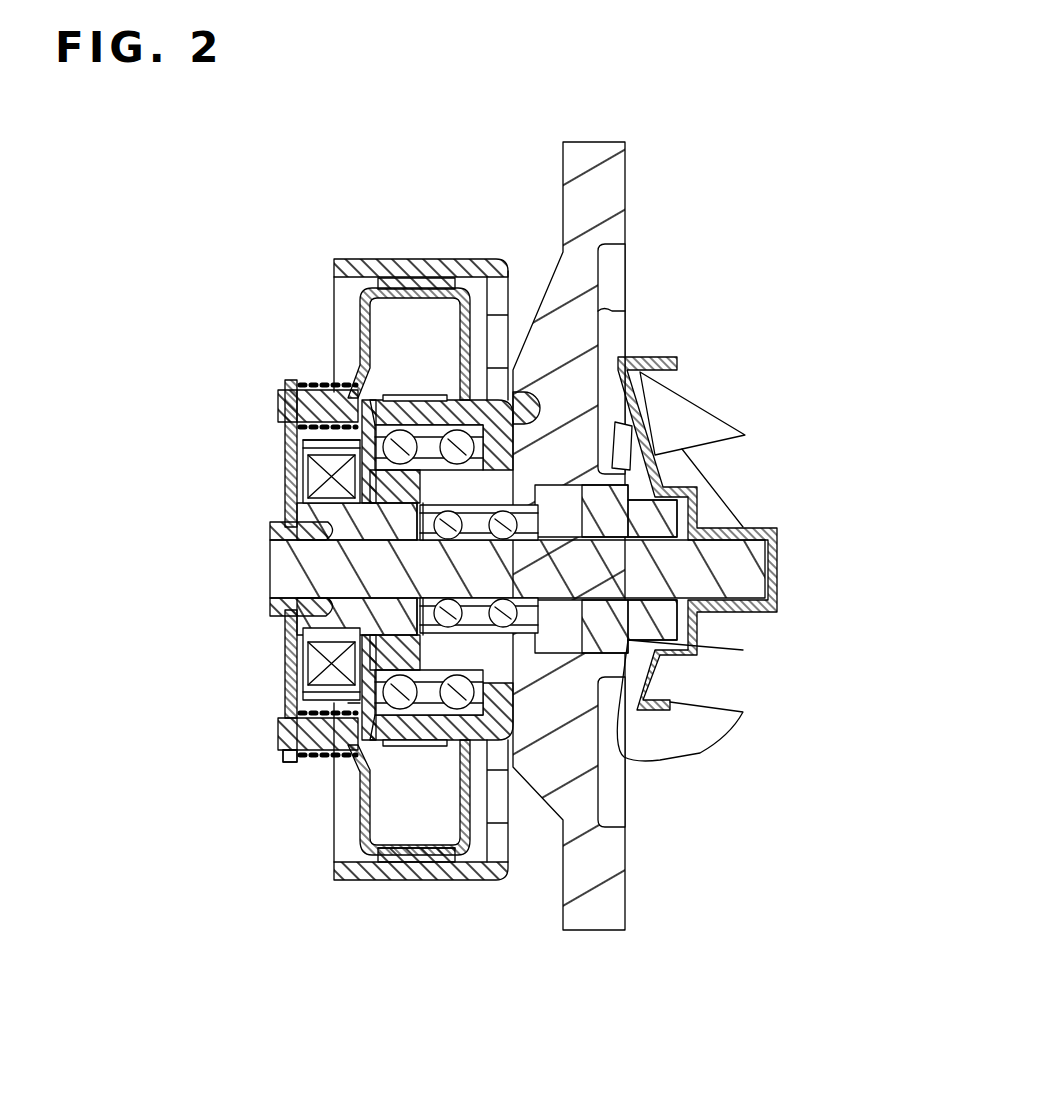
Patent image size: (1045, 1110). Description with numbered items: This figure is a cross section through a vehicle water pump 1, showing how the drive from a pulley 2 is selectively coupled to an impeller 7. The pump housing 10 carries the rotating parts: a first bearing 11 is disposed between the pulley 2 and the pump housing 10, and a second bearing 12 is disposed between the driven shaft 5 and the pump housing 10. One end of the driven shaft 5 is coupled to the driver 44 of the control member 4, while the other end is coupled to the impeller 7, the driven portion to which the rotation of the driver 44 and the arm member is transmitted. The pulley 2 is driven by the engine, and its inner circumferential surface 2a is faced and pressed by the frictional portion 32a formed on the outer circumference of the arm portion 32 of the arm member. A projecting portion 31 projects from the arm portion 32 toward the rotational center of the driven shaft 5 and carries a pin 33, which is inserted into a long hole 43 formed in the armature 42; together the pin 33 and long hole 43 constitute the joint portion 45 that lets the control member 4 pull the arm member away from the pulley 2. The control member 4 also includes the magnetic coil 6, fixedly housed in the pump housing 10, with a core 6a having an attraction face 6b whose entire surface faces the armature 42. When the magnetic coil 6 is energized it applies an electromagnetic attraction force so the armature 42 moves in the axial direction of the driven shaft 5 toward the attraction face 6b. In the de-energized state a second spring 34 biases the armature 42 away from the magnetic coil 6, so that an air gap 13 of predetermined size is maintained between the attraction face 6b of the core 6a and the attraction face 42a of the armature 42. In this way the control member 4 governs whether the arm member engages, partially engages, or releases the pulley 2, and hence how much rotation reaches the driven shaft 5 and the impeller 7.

The water pump 1 is at (623, 94).
The pulley 2 is at (387, 266).
The inner circumferential surface 2a is at (336, 283).
The control member 4 is at (230, 417).
The driven shaft 5 is at (731, 567).
The magnetic coil 6 is at (290, 480).
The core 6a is at (273, 531).
The attraction face 6b is at (297, 497).
The impeller 7 is at (705, 418).
The pump housing 10 is at (597, 214).
The first bearing 11 is at (431, 443).
The second bearing 12 is at (522, 626).
The air gap 13 is at (300, 380).
The projecting portion 31 is at (337, 797).
The arm portion 32 is at (378, 842).
The frictional portion 32a is at (417, 856).
The pin 33 is at (285, 758).
The second spring 34 is at (336, 750).
The armature 42 is at (283, 663).
The attraction face 42a is at (304, 453).
The long hole 43 is at (282, 745).
The driver 44 is at (277, 608).
The joint portion 45 is at (268, 714).